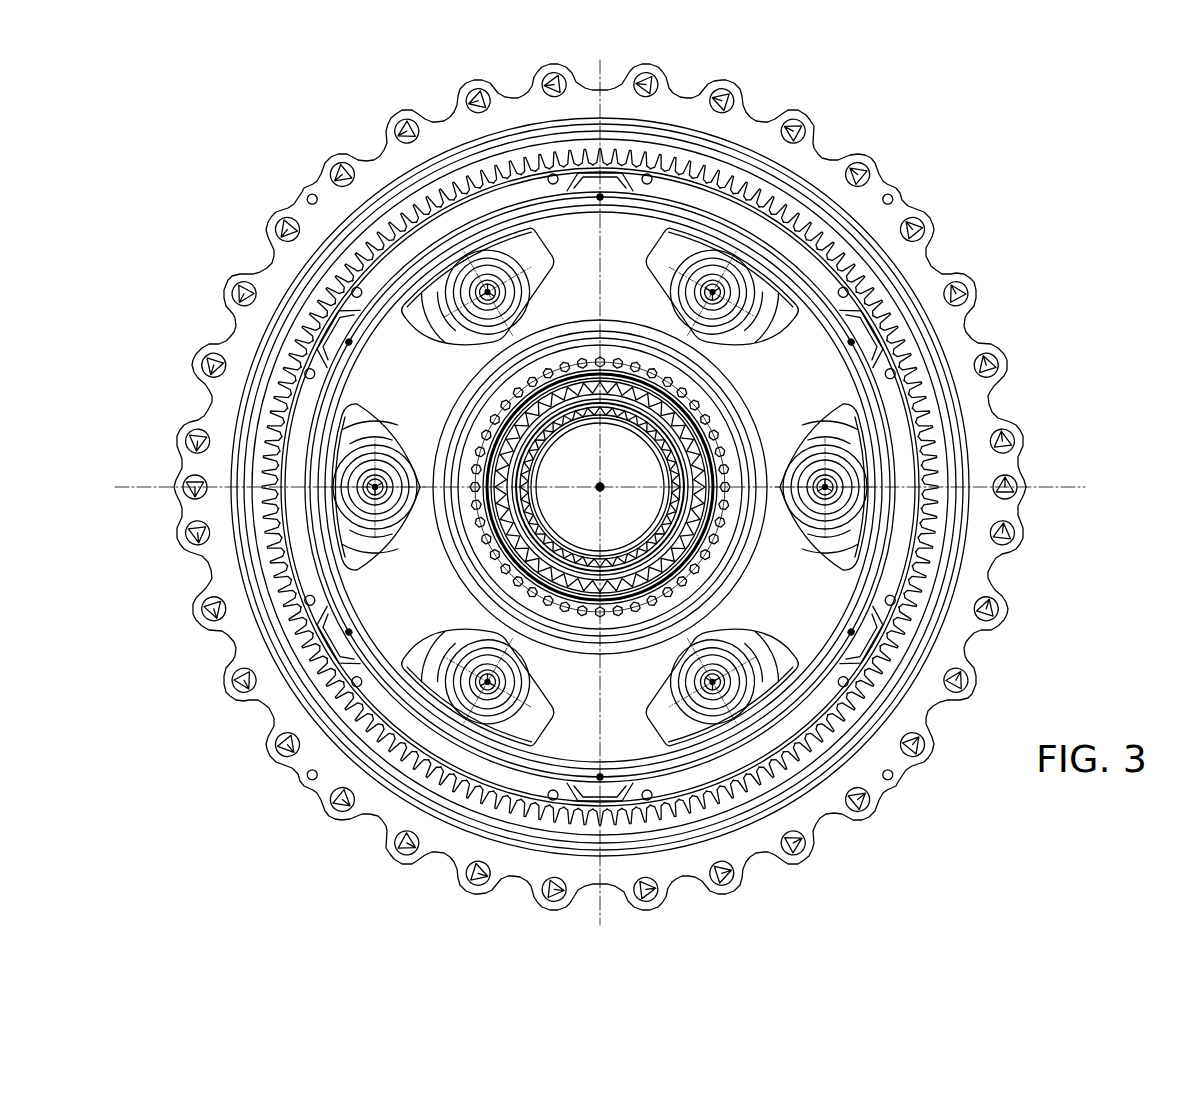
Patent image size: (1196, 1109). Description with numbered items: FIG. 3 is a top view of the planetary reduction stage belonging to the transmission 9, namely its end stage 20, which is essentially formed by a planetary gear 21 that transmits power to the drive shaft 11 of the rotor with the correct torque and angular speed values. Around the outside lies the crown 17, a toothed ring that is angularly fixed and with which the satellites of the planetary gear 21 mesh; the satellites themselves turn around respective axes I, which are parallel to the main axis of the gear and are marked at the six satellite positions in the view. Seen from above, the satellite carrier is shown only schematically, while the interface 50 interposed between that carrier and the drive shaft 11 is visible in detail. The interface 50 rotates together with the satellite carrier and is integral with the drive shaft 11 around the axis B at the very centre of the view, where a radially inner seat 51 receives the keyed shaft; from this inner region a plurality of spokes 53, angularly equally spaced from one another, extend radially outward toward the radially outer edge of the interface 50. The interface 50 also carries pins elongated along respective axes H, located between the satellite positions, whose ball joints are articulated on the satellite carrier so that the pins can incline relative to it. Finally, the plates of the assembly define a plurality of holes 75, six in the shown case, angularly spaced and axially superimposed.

The transmission 9 is at (948, 216).
The end stage 20 is at (1032, 210).
The crown 17 is at (907, 673).
The interface 50 is at (571, 296).
The spokes 53 is at (618, 262).
The holes 75 is at (490, 234).
The planetary gear 21 is at (778, 568).
The drive shaft 11 is at (588, 557).
The radially inner seat 51 is at (534, 481).
The axis B is at (601, 484).
The axes H is at (600, 198).
The axes I is at (492, 294).